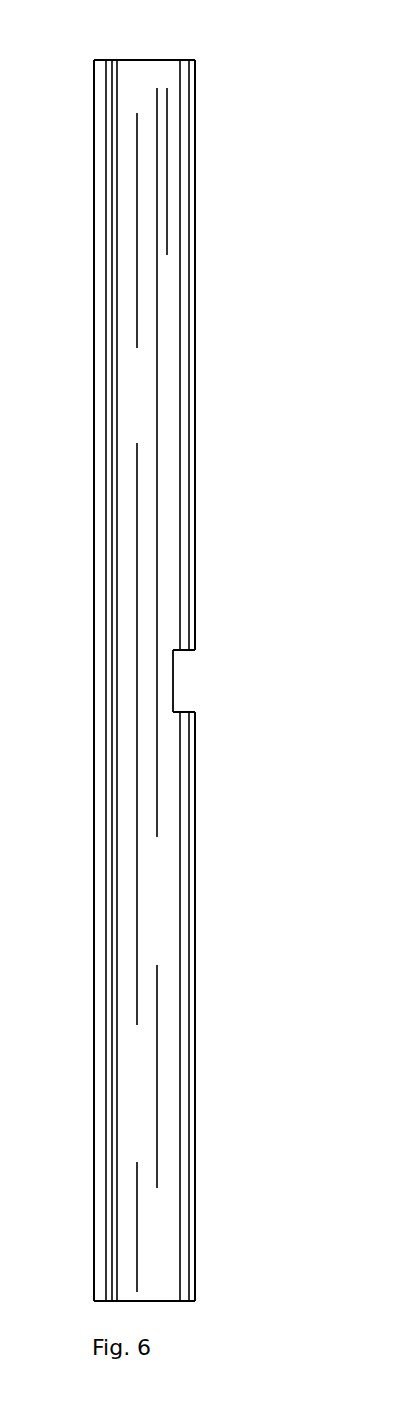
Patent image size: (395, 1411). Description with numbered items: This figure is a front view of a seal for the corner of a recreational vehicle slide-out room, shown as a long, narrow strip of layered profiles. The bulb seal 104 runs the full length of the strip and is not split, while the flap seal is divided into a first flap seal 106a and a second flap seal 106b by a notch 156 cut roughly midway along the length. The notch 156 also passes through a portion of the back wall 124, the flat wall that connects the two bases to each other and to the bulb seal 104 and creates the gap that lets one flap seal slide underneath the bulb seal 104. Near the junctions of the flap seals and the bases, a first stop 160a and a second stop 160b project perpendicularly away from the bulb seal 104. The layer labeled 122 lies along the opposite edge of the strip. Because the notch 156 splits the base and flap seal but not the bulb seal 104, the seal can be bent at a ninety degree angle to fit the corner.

The bulb seal 104 is at (153, 65).
The first outer layer 122 is at (93, 97).
The second stop 160b is at (191, 96).
The second flap seal 106b is at (184, 135).
The first stop 160a is at (193, 1233).
The first flap seal 106a is at (185, 1285).
The notch 156 is at (198, 673).
The back wall 124 is at (175, 688).